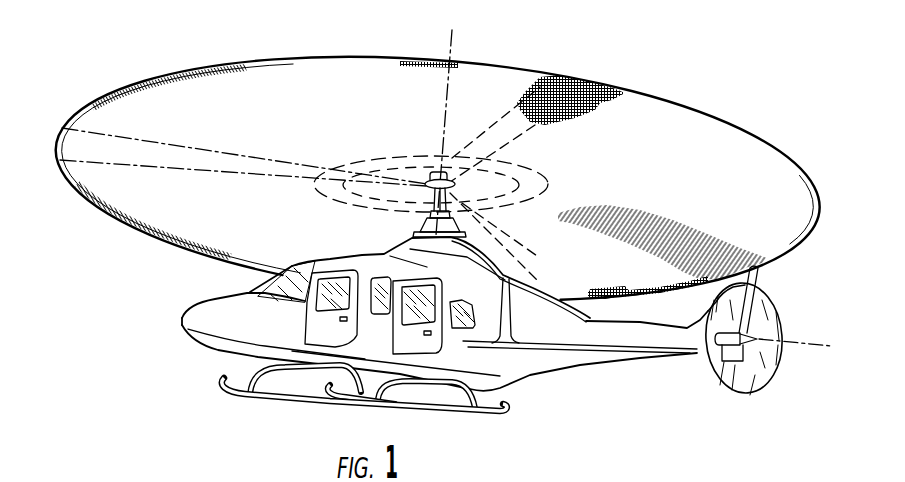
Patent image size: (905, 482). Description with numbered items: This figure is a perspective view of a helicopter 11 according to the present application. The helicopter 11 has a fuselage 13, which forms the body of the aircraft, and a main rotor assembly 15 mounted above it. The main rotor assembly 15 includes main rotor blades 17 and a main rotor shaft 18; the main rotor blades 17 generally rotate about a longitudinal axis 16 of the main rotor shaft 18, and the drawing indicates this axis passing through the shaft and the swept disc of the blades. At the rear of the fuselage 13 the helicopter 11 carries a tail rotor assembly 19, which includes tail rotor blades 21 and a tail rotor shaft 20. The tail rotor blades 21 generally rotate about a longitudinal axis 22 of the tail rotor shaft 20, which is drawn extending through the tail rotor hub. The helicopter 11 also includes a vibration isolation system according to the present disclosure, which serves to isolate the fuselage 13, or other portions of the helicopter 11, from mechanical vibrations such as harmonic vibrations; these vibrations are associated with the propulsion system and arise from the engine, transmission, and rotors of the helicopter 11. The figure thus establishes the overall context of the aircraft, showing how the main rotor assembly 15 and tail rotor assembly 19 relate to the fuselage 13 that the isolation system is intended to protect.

The helicopter 11 is at (619, 57).
The fuselage 13 is at (228, 347).
The main rotor assembly 15 is at (499, 225).
The longitudinal axis 16 is at (444, 120).
The main rotor blades 17 is at (200, 148).
The main rotor shaft 18 is at (418, 203).
The tail rotor assembly 19 is at (754, 411).
The tail rotor shaft 20 is at (724, 345).
The tail rotor blades 21 is at (757, 310).
The longitudinal axis 22 is at (798, 348).